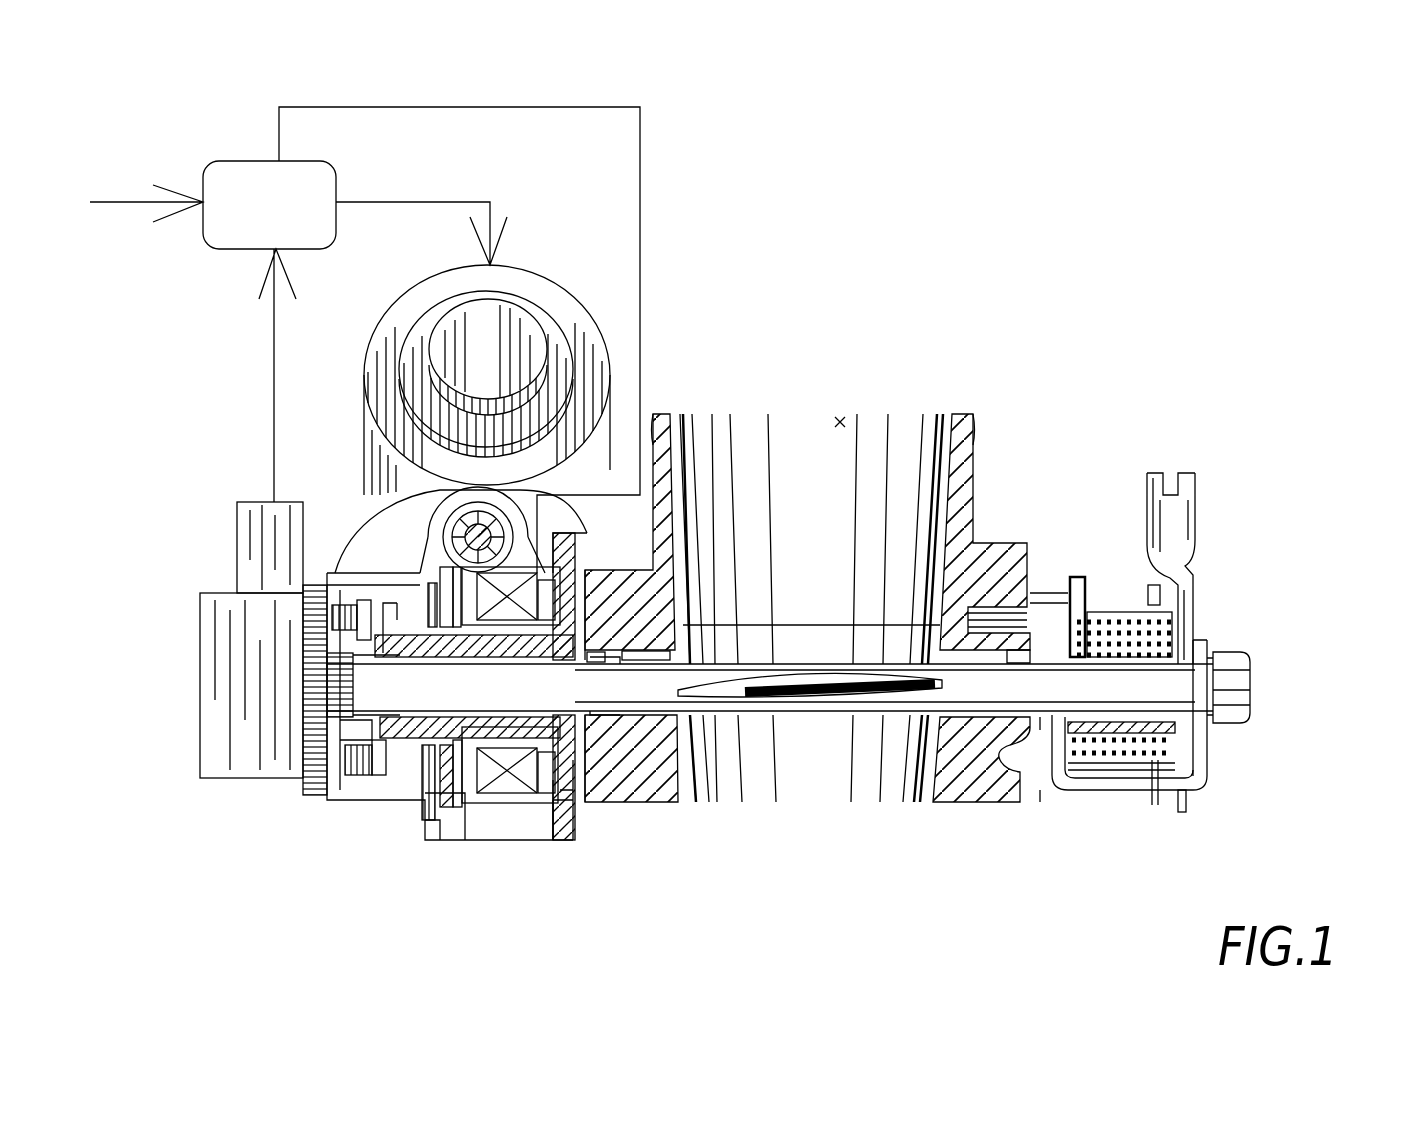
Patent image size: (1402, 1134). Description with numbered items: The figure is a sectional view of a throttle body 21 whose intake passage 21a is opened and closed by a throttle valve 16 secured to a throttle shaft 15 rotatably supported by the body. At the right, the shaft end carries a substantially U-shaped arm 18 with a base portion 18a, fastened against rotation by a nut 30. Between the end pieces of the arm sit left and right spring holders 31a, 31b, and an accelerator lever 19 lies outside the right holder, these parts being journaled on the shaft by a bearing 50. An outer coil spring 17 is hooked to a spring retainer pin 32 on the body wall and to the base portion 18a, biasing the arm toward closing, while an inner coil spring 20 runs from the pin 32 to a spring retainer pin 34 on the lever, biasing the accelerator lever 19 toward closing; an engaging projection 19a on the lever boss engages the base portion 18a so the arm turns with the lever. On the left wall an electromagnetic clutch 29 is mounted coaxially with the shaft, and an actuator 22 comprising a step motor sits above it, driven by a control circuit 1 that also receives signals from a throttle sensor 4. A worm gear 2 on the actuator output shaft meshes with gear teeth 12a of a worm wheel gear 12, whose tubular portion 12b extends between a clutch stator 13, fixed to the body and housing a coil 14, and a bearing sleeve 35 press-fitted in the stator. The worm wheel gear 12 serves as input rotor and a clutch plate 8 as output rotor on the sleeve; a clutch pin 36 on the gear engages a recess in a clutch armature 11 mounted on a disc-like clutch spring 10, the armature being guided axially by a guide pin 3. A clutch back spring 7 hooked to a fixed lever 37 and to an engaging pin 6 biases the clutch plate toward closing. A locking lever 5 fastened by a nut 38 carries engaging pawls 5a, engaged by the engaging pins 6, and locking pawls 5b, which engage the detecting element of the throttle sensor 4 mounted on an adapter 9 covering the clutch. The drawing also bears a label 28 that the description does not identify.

The control circuit 1 is at (230, 249).
The worm gear 2 is at (545, 565).
The guide pin 3 is at (425, 603).
The throttle sensor 4 is at (248, 540).
The locking lever 5 is at (330, 690).
The engaging pawls 5a is at (377, 720).
The locking pawls 5b is at (305, 617).
The engaging pins 6 is at (397, 725).
The clutch back spring 7 is at (405, 595).
The clutch plate 8 is at (400, 775).
The adapter 9 is at (487, 520).
The clutch spring 10 is at (433, 805).
The clutch armature 11 is at (445, 805).
The worm wheel gear 12 is at (513, 770).
The gear teeth 12a is at (467, 805).
The tubular portion 12b is at (385, 618).
The clutch stator 13 is at (573, 800).
The coil 14 is at (563, 800).
The throttle shaft 15 is at (720, 720).
The throttle valve 16 is at (790, 698).
The outer coil spring 17 is at (1093, 760).
The arm 18 is at (1207, 750).
The base portion 18a is at (1133, 787).
The accelerator lever 19 is at (1152, 520).
The engaging projection 19a is at (1177, 810).
The inner coil spring 20 is at (1075, 578).
The throttle body 21 is at (975, 433).
The intake passage 21a is at (840, 422).
The actuator 22 is at (595, 357).
The throttle sensor 28 is at (612, 312).
The electromagnetic clutch 29 is at (591, 551).
The nut 30 is at (1238, 657).
The left spring holder 31a is at (1067, 780).
The right spring holder 31b is at (1188, 790).
The spring retainer pin 32 is at (1050, 590).
The spring retainer pin 34 is at (1150, 595).
The bearing sleeve 35 is at (620, 700).
The clutch pin 36 is at (375, 553).
The fixed lever 37 is at (382, 623).
The nut 38 is at (330, 688).
The bearing 50 is at (1170, 668).